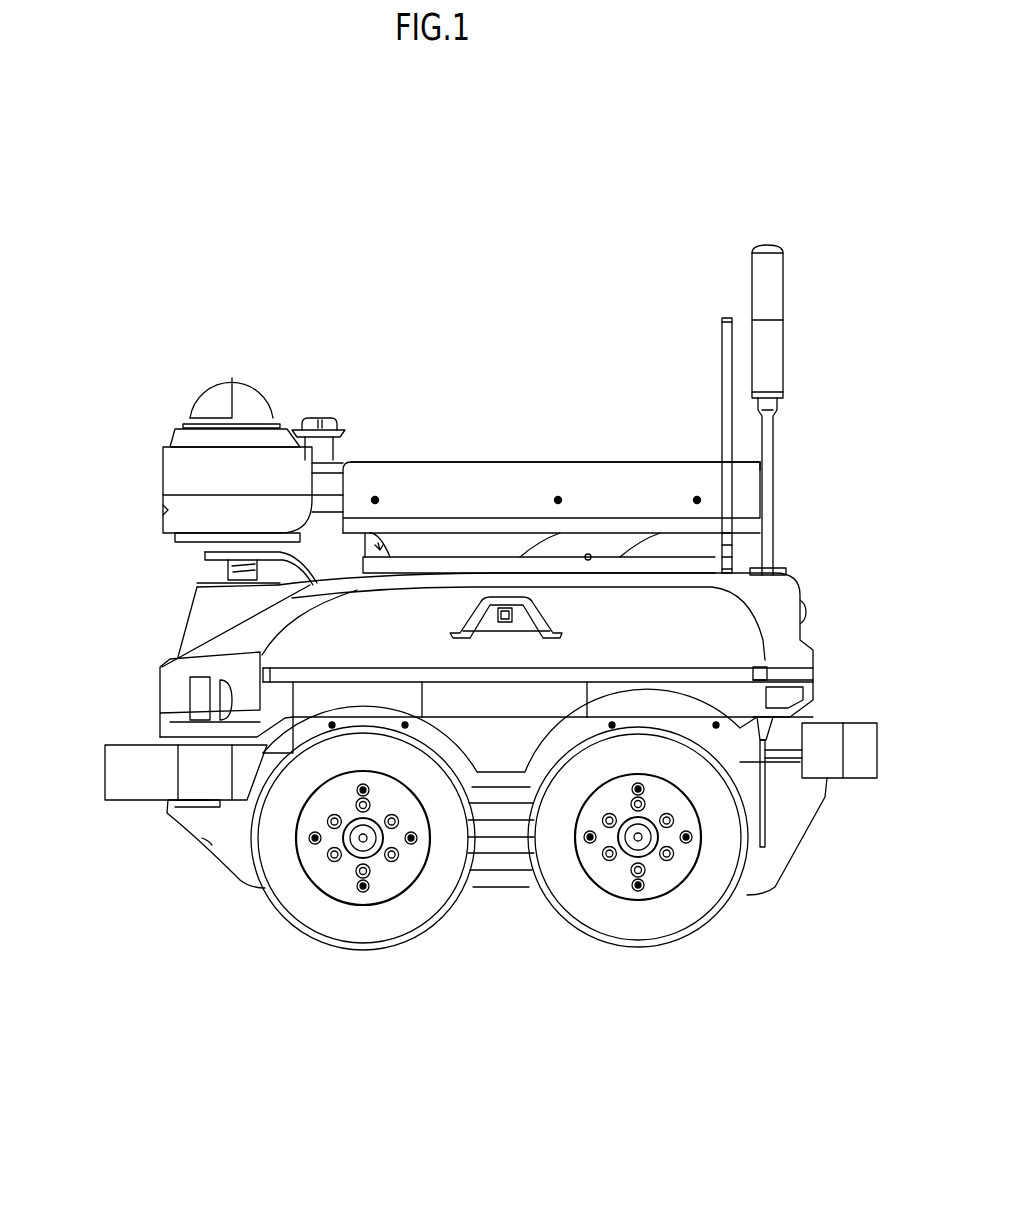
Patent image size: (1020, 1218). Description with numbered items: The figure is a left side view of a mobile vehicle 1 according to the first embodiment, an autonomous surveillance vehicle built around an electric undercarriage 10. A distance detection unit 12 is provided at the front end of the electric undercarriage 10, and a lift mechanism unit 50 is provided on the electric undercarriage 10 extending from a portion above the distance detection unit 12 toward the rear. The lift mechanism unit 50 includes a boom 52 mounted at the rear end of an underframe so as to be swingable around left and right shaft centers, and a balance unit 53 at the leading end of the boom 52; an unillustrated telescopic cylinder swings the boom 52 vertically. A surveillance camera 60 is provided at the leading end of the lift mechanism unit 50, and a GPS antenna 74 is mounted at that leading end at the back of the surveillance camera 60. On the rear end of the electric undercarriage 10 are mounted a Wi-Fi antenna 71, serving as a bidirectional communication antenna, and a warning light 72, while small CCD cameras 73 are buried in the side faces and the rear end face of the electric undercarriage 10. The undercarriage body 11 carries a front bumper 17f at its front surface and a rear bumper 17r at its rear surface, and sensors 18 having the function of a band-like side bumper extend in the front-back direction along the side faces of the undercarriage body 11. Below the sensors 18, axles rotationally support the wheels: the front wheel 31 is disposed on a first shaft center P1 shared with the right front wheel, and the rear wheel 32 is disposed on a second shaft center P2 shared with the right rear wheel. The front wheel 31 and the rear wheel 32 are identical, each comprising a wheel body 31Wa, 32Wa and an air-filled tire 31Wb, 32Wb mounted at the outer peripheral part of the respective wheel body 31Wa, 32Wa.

The mobile vehicle 1 is at (529, 250).
The electric undercarriage 10 is at (158, 685).
The undercarriage body 11 is at (205, 850).
The distance detection unit 12 is at (240, 572).
The front bumper 17f is at (120, 800).
The rear bumper 17r is at (860, 778).
The sensors 18 is at (497, 673).
The front wheel 31 is at (370, 906).
The wheel body 31Wa is at (400, 880).
The tire 31Wb is at (387, 948).
The rear wheel 32 is at (647, 906).
The wheel body 32Wa is at (608, 880).
The tire 32Wb is at (622, 946).
The first shaft center P1 is at (363, 838).
The second shaft center P2 is at (638, 837).
The lift mechanism unit 50 is at (577, 461).
The boom 52 is at (636, 460).
The balance unit 53 is at (163, 468).
The surveillance camera 60 is at (218, 380).
The Wi-Fi antenna 71 is at (726, 316).
The warning light 72 is at (772, 243).
The small CCD cameras 73 is at (506, 608).
The GPS antenna 74 is at (327, 418).